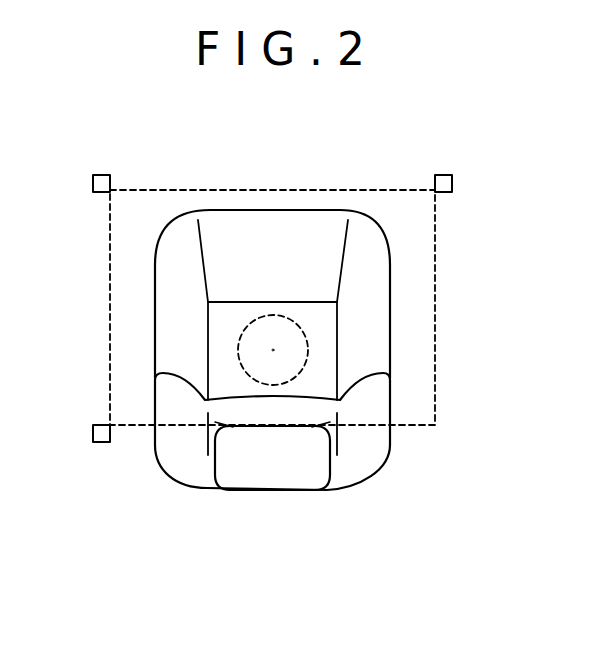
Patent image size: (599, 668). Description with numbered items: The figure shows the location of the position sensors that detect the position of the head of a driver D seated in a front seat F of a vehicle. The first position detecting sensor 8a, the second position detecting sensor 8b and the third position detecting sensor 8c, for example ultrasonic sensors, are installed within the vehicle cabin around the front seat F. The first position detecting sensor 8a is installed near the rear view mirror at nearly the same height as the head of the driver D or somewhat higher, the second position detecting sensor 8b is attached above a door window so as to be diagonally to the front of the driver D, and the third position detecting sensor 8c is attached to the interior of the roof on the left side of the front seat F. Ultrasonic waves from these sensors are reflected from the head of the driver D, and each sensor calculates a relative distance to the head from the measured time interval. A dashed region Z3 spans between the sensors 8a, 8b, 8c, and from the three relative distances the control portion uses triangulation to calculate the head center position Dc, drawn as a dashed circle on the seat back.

The front seat F is at (390, 440).
The detection zone Z3 is at (245, 188).
The first position detecting sensor 8a is at (102, 175).
The second position detecting sensor 8b is at (440, 175).
The third position detecting sensor 8c is at (93, 431).
The driver D is at (268, 316).
The head center position Dc is at (250, 340).